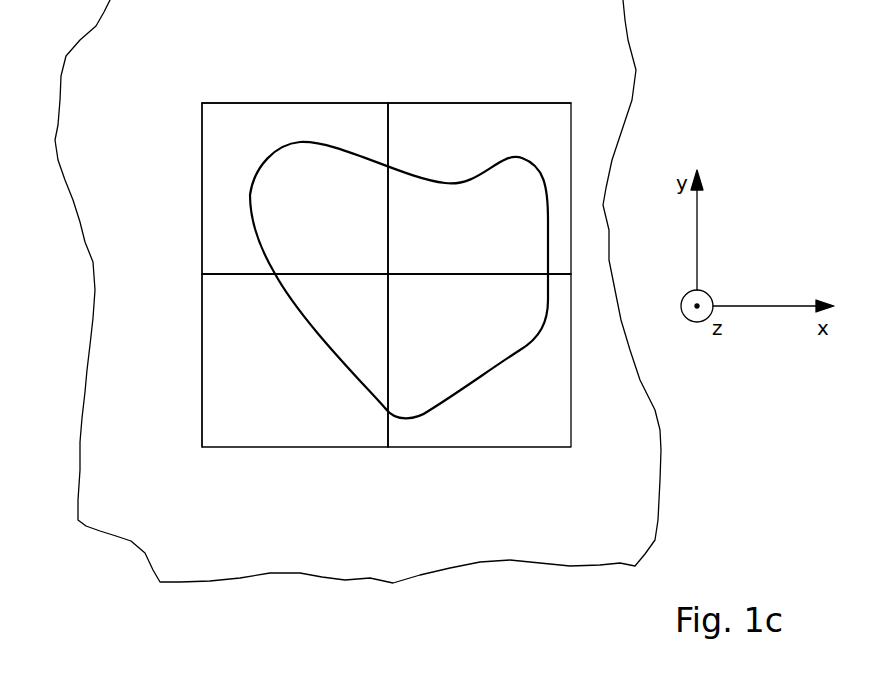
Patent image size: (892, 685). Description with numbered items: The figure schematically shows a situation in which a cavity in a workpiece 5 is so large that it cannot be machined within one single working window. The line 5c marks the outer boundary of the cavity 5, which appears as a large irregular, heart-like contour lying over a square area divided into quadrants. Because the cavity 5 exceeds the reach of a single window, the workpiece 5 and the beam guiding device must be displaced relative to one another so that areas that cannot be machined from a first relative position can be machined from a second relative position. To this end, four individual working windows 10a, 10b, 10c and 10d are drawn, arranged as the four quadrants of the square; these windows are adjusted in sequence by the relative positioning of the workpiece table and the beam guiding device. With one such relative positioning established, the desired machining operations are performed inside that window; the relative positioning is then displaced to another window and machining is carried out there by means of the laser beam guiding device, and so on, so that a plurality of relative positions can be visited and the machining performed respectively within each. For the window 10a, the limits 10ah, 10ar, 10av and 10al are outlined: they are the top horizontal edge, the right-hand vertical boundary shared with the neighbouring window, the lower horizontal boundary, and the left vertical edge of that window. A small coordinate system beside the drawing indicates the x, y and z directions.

The workpiece 5 is at (134, 537).
The line 5c is at (250, 199).
The working window 10a is at (298, 122).
The working window 10b is at (497, 113).
The working window 10c is at (212, 372).
The working window 10d is at (477, 446).
The limit 10ah is at (242, 102).
The limit 10al is at (202, 133).
The limit 10ar is at (388, 126).
The limit 10av is at (222, 274).